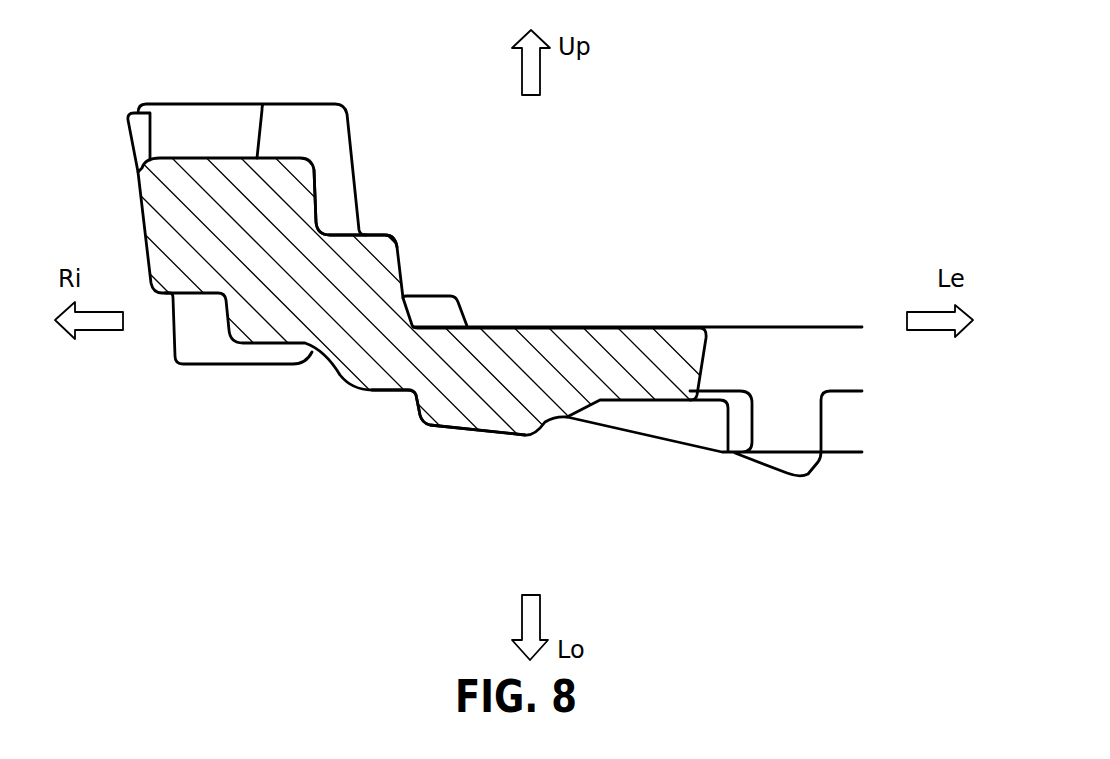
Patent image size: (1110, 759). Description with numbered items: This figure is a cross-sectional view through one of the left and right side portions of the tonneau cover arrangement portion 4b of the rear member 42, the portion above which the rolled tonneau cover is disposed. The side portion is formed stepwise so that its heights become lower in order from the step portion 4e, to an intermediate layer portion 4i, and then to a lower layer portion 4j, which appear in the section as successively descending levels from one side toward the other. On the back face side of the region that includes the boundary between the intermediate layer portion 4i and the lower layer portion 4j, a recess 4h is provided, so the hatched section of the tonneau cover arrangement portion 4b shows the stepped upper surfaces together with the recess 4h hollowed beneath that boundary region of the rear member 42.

The tonneau cover arrangement portion 4b is at (626, 245).
The step portion 4e is at (277, 150).
The intermediate layer portion 4i is at (371, 225).
The lower layer portion 4j is at (489, 322).
The recess 4h is at (389, 415).
The rear member 42 is at (782, 327).